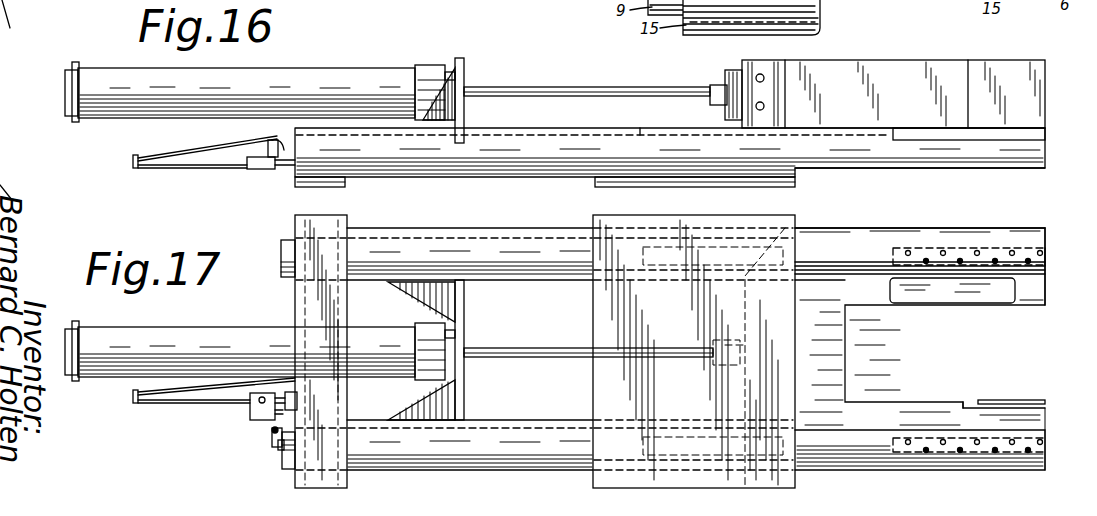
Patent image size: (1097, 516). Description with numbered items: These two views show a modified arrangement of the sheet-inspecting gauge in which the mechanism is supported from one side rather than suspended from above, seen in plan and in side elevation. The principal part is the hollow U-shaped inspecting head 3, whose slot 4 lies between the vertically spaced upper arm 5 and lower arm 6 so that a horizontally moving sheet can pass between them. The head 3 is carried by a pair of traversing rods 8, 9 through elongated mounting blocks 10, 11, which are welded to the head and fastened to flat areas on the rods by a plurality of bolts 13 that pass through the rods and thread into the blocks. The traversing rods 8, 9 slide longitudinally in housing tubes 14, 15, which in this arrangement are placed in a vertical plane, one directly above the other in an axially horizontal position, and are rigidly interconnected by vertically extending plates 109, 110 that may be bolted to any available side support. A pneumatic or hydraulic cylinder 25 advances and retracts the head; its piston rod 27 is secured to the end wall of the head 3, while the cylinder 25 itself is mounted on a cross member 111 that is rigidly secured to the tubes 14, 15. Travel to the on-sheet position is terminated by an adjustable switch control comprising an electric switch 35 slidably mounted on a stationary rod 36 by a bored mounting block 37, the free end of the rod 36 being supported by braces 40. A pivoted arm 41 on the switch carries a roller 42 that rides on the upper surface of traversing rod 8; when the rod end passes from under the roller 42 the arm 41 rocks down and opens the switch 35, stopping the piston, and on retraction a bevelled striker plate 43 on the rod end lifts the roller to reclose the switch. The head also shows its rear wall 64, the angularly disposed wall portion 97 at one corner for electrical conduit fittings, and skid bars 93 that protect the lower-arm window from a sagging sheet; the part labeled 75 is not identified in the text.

In FIG. 16, the inspecting head 3 is at (910, 60).
In FIG. 17, the inspecting head 3 is at (886, 228).
In FIG. 17, the slot 4 is at (1030, 358).
In FIG. 16, the upper arm 5 is at (1010, 64).
In FIG. 17, the upper arm 5 is at (1046, 290).
In FIG. 17, the lower arm 6 is at (936, 412).
In FIG. 16, the traversing rod 8 is at (925, 162).
In FIG. 17, the traversing rod 8 is at (284, 245).
In FIG. 17, the traversing rod 9 is at (867, 462).
In FIG. 17, the mounting block 10 is at (952, 250).
In FIG. 17, the mounting block 11 is at (963, 456).
In FIG. 17, the bolts 13 is at (1034, 258).
In FIG. 16, the tube 14 is at (568, 128).
In FIG. 17, the tube 14 is at (530, 232).
In FIG. 17, the tube 15 is at (534, 470).
In FIG. 16, the cylinder 25 is at (320, 72).
In FIG. 17, the cylinder 25 is at (211, 330).
In FIG. 16, the piston rod 27 is at (622, 92).
In FIG. 17, the piston rod 27 is at (563, 348).
In FIG. 17, the electric switch 35 is at (298, 408).
In FIG. 16, the stationary rod 36 is at (217, 167).
In FIG. 17, the stationary rod 36 is at (168, 404).
In FIG. 16, the mounting block 37 is at (260, 169).
In FIG. 17, the mounting block 37 is at (258, 410).
In FIG. 16, the braces 40 is at (186, 150).
In FIG. 17, the braces 40 is at (145, 390).
In FIG. 17, the pivoted arm 41 is at (278, 416).
In FIG. 16, the roller 42 is at (268, 146).
In FIG. 17, the roller 42 is at (270, 432).
In FIG. 16, the bevelled striker plate 43 is at (277, 140).
In FIG. 17, the bevelled striker plate 43 is at (278, 446).
In FIG. 16, the rear wall 64 is at (733, 86).
In FIG. 17, the rear wall 64 is at (745, 394).
In FIG. 17, the plate 75 is at (948, 304).
In FIG. 17, the skid bars 93 is at (986, 400).
In FIG. 16, the angularly disposed wall portion 97 is at (776, 72).
In FIG. 16, the plate 109 is at (340, 187).
In FIG. 17, the plate 109 is at (340, 215).
In FIG. 16, the plate 110 is at (612, 187).
In FIG. 17, the plate 110 is at (612, 220).
In FIG. 16, the cross member 111 is at (465, 72).
In FIG. 17, the cross member 111 is at (465, 298).